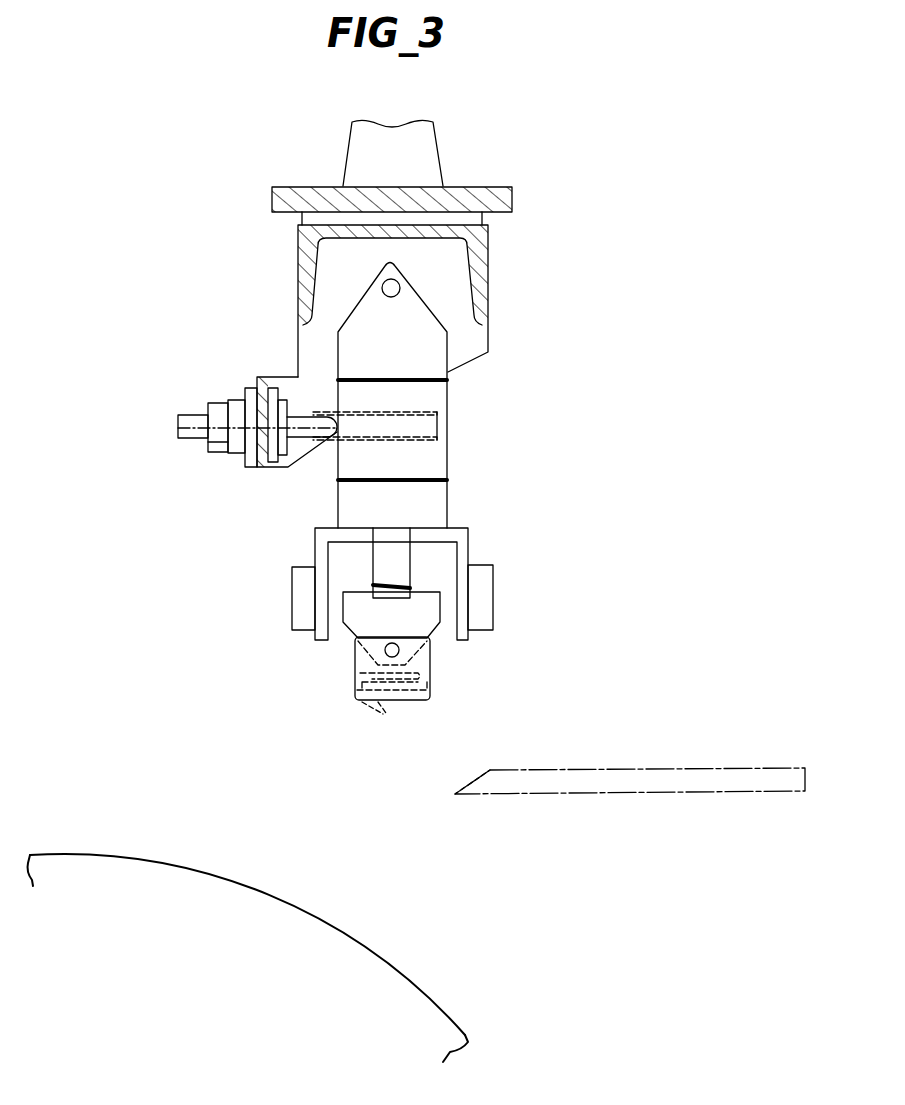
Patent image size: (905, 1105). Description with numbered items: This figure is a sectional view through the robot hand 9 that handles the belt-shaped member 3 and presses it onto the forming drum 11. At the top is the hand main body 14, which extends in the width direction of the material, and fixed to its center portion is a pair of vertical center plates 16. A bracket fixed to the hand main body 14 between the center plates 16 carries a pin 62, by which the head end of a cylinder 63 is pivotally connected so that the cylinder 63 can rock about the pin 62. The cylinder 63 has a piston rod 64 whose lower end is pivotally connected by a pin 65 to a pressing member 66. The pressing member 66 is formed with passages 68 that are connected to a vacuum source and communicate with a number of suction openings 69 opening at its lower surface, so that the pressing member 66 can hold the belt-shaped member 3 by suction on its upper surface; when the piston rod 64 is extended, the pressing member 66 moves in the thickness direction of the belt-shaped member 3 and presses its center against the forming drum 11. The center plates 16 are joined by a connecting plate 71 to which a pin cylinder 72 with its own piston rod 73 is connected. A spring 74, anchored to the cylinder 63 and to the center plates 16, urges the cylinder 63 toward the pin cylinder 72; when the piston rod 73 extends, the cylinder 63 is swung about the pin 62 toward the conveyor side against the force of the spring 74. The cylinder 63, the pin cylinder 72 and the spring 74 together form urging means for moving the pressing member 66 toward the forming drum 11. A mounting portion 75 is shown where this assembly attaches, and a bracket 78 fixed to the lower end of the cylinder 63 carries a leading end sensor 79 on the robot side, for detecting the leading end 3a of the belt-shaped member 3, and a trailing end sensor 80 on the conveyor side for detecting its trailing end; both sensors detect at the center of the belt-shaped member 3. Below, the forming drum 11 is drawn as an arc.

The belt-shaped member 3 is at (617, 770).
The leading end 3a is at (450, 795).
The hand 9 is at (474, 176).
The forming drum 11 is at (272, 900).
The hand main body 14 is at (510, 204).
The center plates 16 is at (472, 352).
The pin 62 is at (391, 297).
The cylinder 63 is at (437, 489).
The piston rod 64 is at (400, 572).
The pin 65 is at (392, 643).
The pressing member 66 is at (432, 683).
The passages 68 is at (355, 673).
The suction openings 69 is at (382, 721).
The connecting plate 71 is at (258, 468).
The pin cylinder 72 is at (237, 403).
The piston rod 73 is at (318, 440).
The spring 74 is at (437, 413).
The bracket 75 is at (284, 358).
The bracket 78 is at (468, 540).
The leading end sensor 79 is at (292, 607).
The trailing end sensor 80 is at (487, 600).